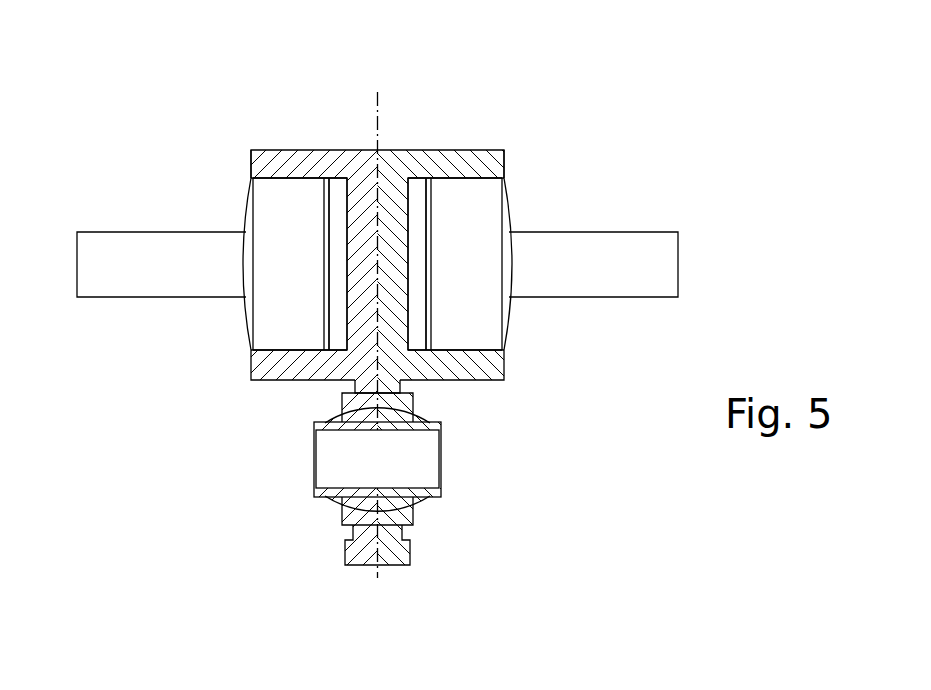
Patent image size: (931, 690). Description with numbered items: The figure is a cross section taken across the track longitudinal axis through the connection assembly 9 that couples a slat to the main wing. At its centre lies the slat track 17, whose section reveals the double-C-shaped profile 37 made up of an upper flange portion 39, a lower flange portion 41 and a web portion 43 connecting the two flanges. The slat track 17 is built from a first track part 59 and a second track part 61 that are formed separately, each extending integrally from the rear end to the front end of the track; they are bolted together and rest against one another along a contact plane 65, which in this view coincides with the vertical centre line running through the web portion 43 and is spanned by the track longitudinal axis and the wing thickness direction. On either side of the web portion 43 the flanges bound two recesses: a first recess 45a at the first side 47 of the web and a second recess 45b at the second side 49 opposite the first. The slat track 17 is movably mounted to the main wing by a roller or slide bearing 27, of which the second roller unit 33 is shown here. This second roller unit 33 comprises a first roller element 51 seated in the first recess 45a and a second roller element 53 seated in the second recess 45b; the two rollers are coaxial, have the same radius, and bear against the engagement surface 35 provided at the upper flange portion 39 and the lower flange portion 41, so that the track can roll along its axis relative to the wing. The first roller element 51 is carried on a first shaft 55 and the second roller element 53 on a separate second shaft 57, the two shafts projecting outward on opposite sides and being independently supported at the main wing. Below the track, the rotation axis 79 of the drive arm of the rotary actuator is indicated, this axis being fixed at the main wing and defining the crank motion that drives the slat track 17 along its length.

The connection assembly 9 is at (570, 105).
The slat track 17 is at (445, 167).
The roller or slide bearing 27 is at (213, 132).
The second roller unit 33 is at (381, 323).
The engagement surface 35 is at (298, 177).
The double-C-shaped profile 37 is at (575, 405).
The upper flange portion 39 is at (316, 160).
The lower flange portion 41 is at (302, 362).
The web portion 43 is at (348, 282).
The first recess 45a is at (338, 204).
The second recess 45b is at (418, 197).
The first side 47 is at (347, 318).
The second side 49 is at (408, 318).
The first roller element 51 is at (302, 256).
The second roller element 53 is at (492, 256).
The first shaft 55 is at (107, 280).
The second shaft 57 is at (662, 280).
The first track part 59 is at (263, 167).
The second track part 61 is at (496, 163).
The contact plane 65 is at (378, 100).
The rotation axis 79 is at (245, 350).